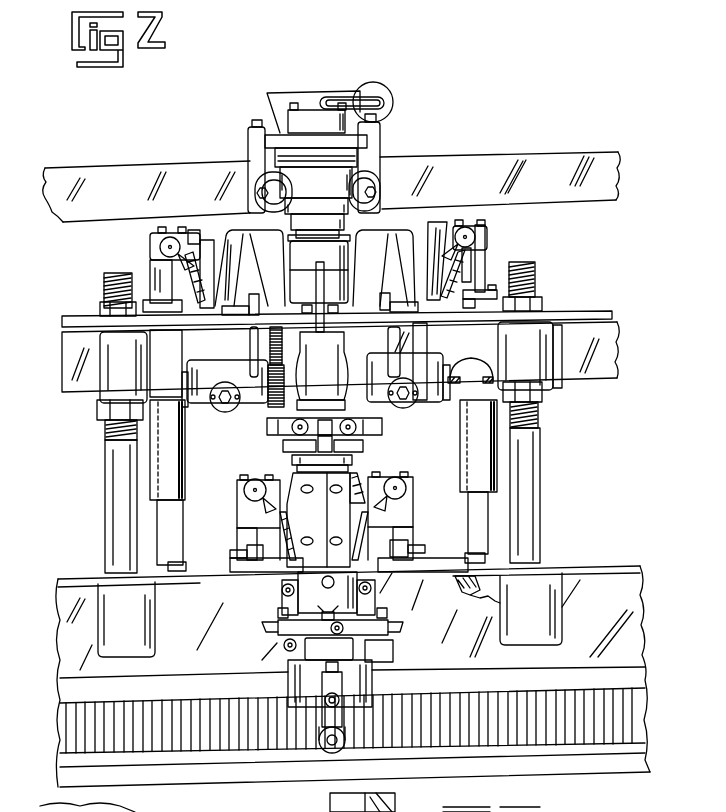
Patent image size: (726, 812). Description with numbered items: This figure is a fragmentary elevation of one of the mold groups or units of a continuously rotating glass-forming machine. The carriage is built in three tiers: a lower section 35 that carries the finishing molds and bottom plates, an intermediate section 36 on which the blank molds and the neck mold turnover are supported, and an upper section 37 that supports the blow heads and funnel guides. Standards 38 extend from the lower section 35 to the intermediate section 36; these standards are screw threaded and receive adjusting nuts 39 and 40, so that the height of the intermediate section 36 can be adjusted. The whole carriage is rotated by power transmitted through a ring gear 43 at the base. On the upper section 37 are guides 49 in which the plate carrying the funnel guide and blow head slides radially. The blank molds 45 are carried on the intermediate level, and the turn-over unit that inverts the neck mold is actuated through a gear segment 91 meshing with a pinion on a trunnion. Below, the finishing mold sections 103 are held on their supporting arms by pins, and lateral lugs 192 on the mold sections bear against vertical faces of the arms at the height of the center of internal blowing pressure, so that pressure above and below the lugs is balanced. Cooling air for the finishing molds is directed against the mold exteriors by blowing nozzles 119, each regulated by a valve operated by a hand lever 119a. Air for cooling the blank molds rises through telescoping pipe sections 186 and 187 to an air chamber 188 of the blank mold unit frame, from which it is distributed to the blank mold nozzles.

The lower section 35 is at (603, 567).
The intermediate section 36 is at (612, 357).
The upper section 37 is at (571, 157).
The standards 38 is at (117, 488).
The adjusting nut 39 is at (550, 393).
The adjusting nut 40 is at (545, 308).
The ring gear 43 is at (590, 738).
The blank mold 45 is at (428, 223).
The guides 49 is at (378, 149).
The gear segment 91 is at (270, 345).
The finishing mold sections 103 is at (293, 477).
The blowing nozzles 119 is at (253, 500).
The hand levers 119a is at (204, 264).
The telescoping pipe section 186 is at (487, 543).
The telescoping pipe section 187 is at (497, 462).
The air chamber 188 is at (463, 388).
The lateral lugs 192 is at (280, 513).